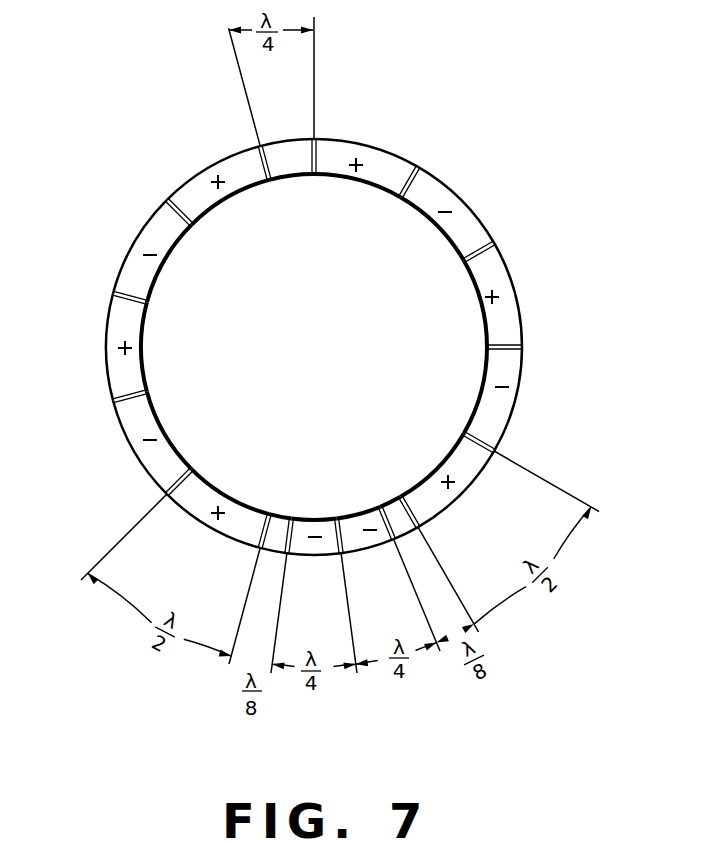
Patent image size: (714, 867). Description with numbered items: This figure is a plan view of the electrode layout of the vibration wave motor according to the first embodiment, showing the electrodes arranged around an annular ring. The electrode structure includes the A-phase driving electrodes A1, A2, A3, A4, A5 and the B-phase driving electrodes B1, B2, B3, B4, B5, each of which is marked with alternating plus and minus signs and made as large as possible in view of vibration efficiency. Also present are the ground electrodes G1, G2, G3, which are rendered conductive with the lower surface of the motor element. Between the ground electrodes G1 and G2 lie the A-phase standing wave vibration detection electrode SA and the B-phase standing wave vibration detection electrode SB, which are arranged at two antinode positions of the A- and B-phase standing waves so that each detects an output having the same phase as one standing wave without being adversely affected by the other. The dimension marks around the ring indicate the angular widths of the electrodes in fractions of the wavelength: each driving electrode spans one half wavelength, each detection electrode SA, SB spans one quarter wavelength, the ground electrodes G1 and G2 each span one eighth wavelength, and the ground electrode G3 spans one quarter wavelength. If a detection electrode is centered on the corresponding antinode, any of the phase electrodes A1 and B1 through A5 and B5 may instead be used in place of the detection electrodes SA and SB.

The A-phase driving electrode A1 is at (470, 479).
The A-phase driving electrode A2 is at (513, 384).
The A-phase driving electrode A3 is at (497, 275).
The A-phase driving electrode A4 is at (440, 197).
The A-phase driving electrode A5 is at (386, 162).
The B-phase driving electrode B1 is at (207, 514).
The B-phase driving electrode B2 is at (132, 425).
The B-phase driving electrode B3 is at (115, 326).
The B-phase driving electrode B4 is at (150, 237).
The B-phase driving electrode B5 is at (226, 164).
The ground electrode G1 is at (392, 510).
The ground electrode G2 is at (278, 524).
The ground electrode G3 is at (290, 151).
The A-phase standing wave vibration detection electrode SA is at (367, 540).
The B-phase standing wave vibration detection electrode SB is at (318, 548).